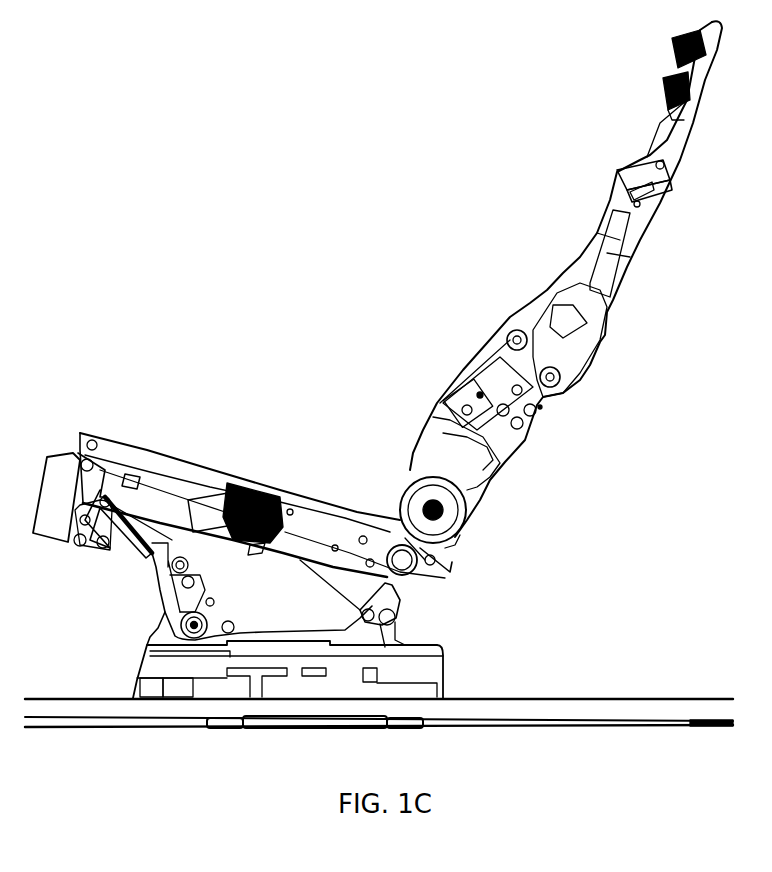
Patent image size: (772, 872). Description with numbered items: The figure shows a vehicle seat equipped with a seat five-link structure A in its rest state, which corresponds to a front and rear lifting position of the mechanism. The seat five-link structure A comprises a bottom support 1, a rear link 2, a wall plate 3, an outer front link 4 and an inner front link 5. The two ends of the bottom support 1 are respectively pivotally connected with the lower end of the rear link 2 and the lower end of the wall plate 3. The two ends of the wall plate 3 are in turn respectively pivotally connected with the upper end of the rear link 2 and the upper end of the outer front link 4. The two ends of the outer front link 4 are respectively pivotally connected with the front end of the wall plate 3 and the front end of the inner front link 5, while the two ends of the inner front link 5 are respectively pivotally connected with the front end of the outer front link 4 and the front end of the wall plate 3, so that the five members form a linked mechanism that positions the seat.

The bottom support 1 is at (347, 652).
The rear link 2 is at (397, 587).
The wall plate 3 is at (323, 523).
The outer front link 4 is at (183, 533).
The inner front link 5 is at (193, 597).
The seat five-link structure A is at (292, 462).